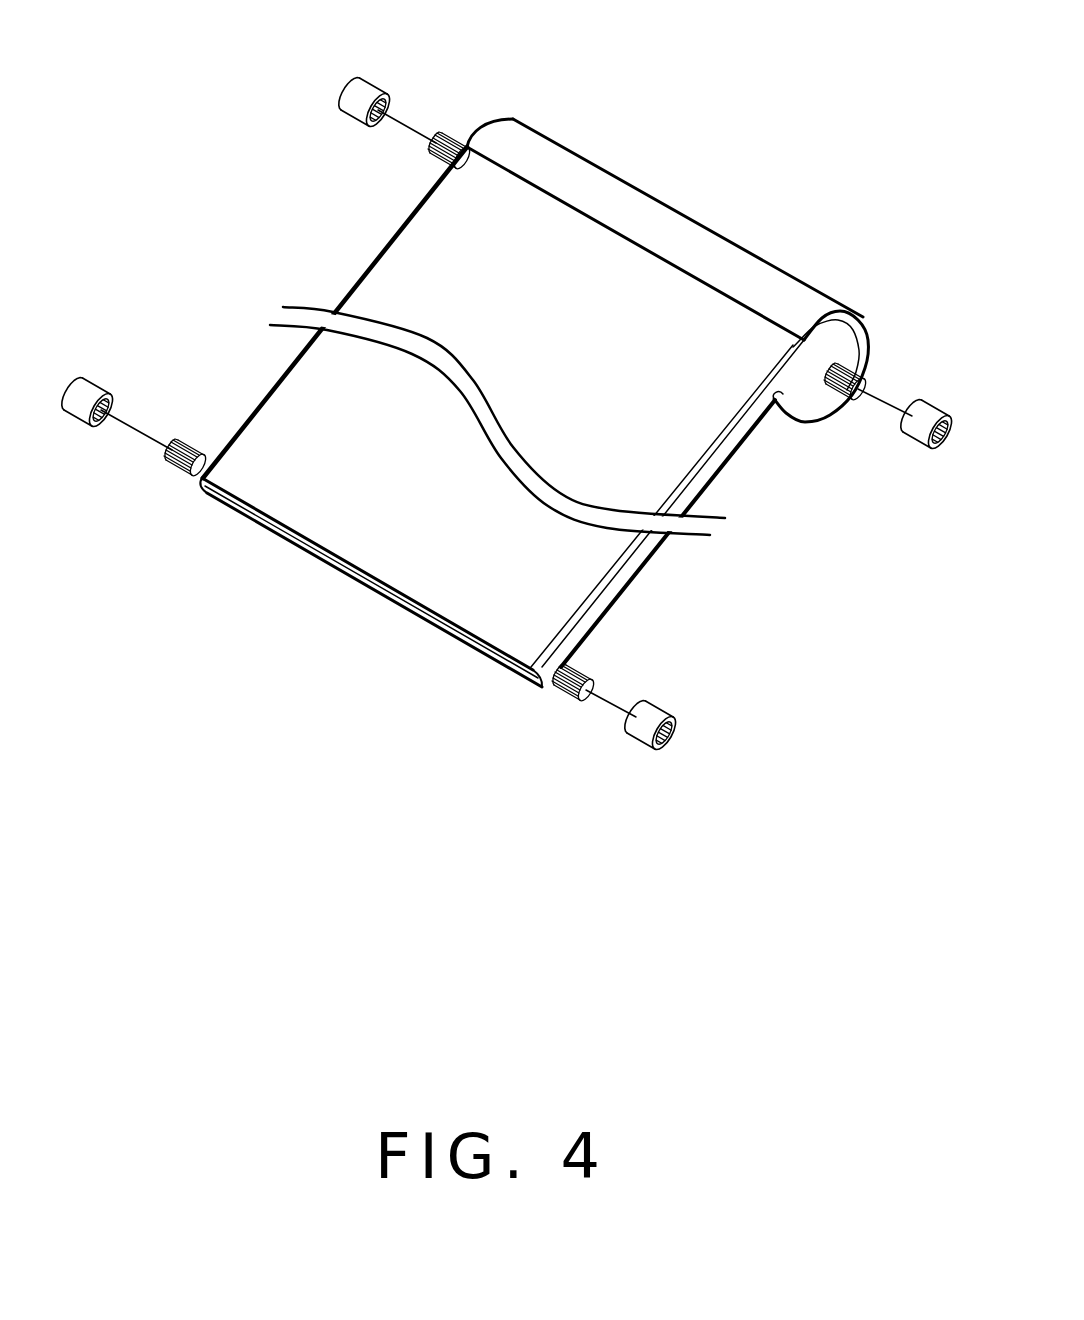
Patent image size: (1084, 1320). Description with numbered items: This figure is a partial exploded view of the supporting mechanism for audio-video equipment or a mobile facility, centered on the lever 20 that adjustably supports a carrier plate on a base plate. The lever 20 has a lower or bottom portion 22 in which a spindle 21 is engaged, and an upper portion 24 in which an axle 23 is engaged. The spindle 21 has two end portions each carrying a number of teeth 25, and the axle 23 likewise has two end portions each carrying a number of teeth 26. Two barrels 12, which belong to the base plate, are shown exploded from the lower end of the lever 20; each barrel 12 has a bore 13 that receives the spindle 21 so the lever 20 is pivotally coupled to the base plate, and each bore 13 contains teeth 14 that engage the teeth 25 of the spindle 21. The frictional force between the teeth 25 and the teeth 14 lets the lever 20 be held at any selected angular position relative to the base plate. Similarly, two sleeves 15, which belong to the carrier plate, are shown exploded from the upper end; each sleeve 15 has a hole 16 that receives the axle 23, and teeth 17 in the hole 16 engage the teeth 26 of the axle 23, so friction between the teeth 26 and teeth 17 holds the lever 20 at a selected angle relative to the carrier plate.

The barrel 12 is at (638, 733).
The bore 13 is at (112, 403).
The teeth 14 is at (102, 423).
The sleeve 15 is at (910, 430).
The hole 16 is at (390, 103).
The teeth 17 is at (378, 127).
The lever 20 is at (402, 272).
The spindle 21 is at (197, 477).
The lower end portion 22 is at (337, 523).
The axle 23 is at (824, 360).
The upper end portion 24 is at (632, 200).
The teeth 25 is at (570, 698).
The teeth 26 is at (863, 330).